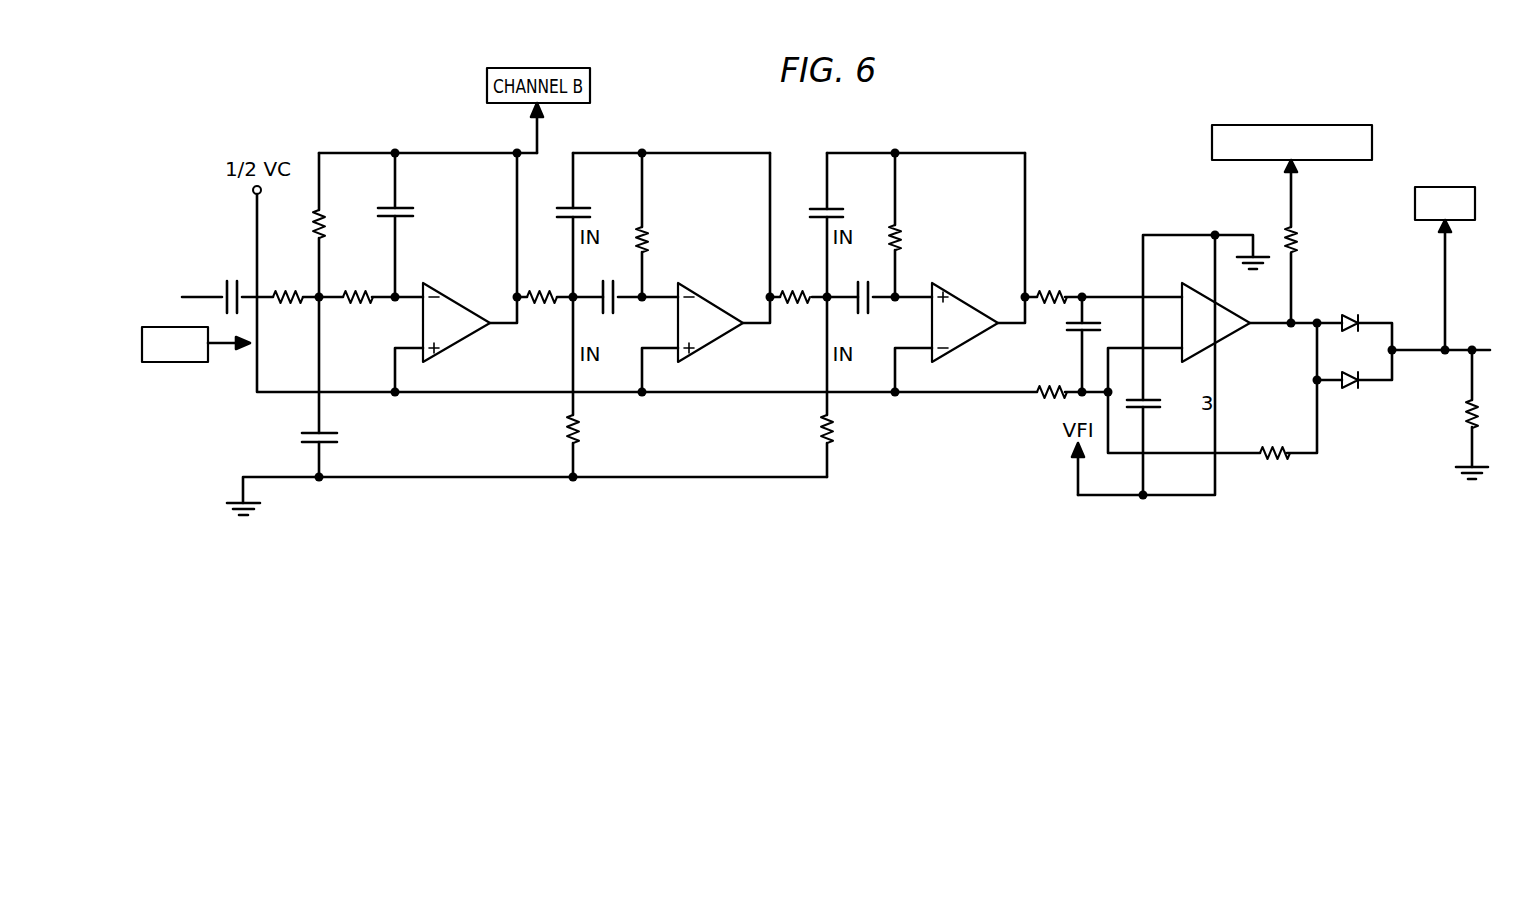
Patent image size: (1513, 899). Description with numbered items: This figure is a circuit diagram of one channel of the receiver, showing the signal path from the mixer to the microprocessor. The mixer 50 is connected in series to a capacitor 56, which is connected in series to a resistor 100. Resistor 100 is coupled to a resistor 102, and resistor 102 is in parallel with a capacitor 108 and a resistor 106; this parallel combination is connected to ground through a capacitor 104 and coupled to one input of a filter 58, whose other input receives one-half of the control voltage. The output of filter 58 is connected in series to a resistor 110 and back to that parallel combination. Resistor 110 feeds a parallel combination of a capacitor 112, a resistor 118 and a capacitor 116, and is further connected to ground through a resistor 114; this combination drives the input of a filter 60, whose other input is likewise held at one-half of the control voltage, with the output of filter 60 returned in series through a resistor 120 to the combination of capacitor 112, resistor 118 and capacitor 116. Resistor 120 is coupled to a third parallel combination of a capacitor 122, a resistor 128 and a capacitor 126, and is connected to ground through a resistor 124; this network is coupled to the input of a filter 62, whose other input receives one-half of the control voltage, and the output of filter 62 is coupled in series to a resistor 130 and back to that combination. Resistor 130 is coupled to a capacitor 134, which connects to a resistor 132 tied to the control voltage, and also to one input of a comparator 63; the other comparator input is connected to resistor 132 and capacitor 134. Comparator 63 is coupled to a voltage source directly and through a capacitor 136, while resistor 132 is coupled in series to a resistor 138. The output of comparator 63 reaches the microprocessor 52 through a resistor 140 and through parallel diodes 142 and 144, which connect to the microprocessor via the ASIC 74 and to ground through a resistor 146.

The mixer 50 is at (185, 364).
The microprocessor 52 is at (1305, 125).
The capacitor 56 is at (224, 286).
The filter 58 is at (463, 340).
The filter 60 is at (719, 338).
The filter 62 is at (974, 338).
The comparator 63 is at (1226, 340).
The ASIC 74 is at (1450, 187).
The resistor 100 is at (292, 305).
The resistor 102 is at (315, 228).
The capacitor 104 is at (315, 432).
The resistor 106 is at (356, 307).
The capacitor 108 is at (406, 208).
The resistor 110 is at (548, 305).
The capacitor 112 is at (561, 207).
The resistor 114 is at (568, 428).
The capacitor 116 is at (614, 304).
The resistor 118 is at (646, 228).
The resistor 120 is at (798, 305).
The capacitor 122 is at (815, 208).
The resistor 124 is at (822, 428).
The capacitor 126 is at (871, 304).
The resistor 128 is at (899, 226).
The resistor 130 is at (1050, 305).
The resistor 132 is at (1045, 400).
The capacitor 134 is at (1096, 320).
The capacitor 136 is at (1155, 410).
The resistor 138 is at (1286, 459).
The resistor 140 is at (1300, 235).
The diode 142 is at (1360, 318).
The diode 144 is at (1370, 386).
The resistor 146 is at (1465, 420).